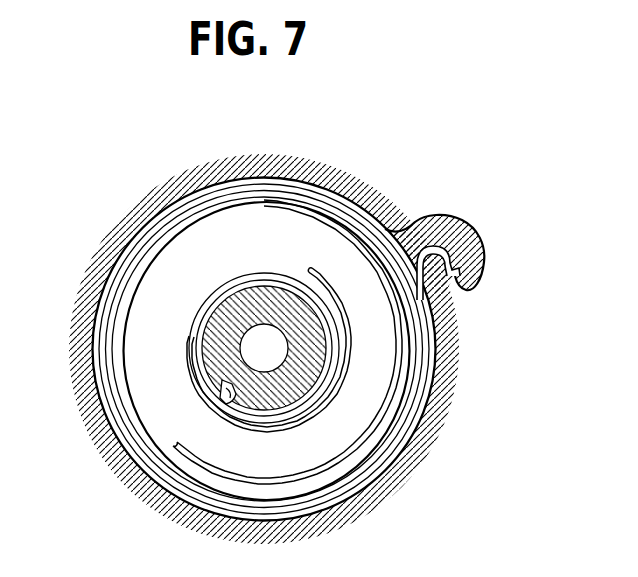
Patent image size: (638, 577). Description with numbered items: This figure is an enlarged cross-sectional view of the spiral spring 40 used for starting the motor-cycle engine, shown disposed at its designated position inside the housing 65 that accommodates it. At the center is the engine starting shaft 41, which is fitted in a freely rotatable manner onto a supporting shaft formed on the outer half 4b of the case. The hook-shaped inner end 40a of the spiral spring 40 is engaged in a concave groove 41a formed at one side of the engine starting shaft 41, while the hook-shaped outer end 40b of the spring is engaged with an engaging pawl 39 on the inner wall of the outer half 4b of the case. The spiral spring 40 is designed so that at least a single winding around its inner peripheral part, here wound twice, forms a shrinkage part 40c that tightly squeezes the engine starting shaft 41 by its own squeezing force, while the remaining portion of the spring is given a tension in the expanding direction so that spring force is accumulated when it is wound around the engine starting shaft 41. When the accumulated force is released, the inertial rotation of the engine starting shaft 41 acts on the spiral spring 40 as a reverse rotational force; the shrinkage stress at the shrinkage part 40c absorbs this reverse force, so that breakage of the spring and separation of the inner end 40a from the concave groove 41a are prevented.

The housing 65 is at (232, 260).
The spiral spring 40 is at (183, 205).
The outer half of the case 4b is at (310, 177).
The hook-shaped inner end 40a is at (231, 398).
The hook-shaped outer end 40b is at (452, 260).
The shrinkage part 40c is at (198, 341).
The engaging pawl 39 is at (428, 257).
The engine starting shaft 41 is at (280, 292).
The concave groove 41a is at (222, 386).